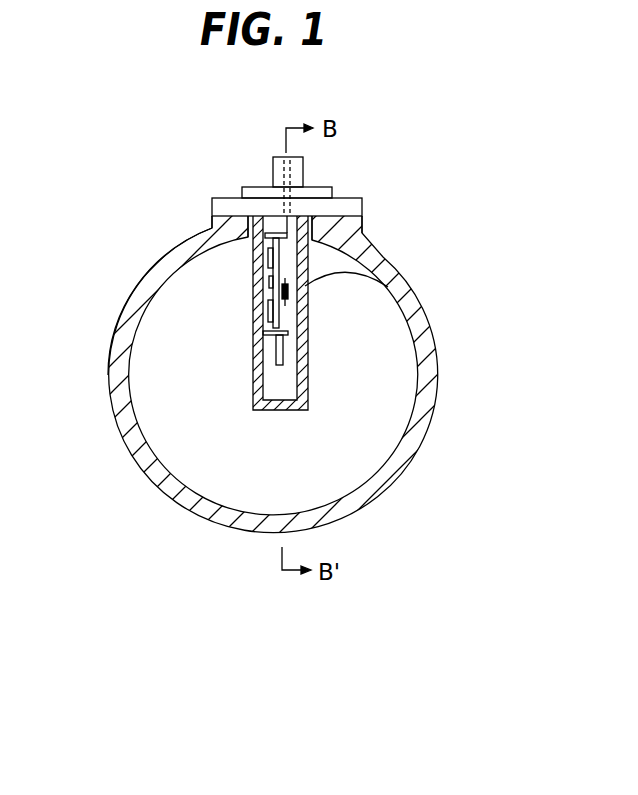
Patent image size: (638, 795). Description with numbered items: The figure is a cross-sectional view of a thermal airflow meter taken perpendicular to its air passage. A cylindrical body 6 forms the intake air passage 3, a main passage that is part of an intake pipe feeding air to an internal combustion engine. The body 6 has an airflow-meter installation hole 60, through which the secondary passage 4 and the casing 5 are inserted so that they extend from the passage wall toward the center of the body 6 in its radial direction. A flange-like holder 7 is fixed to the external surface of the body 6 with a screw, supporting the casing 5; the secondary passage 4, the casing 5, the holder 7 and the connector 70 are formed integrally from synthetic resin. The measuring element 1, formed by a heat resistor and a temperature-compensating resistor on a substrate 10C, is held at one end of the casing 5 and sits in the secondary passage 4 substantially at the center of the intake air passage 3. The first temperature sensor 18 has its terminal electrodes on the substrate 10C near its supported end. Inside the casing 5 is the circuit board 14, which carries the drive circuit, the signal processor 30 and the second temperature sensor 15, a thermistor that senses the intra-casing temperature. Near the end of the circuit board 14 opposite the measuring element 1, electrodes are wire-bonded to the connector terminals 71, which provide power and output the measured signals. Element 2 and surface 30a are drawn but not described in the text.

The measuring element 1 is at (253, 349).
The substrate (first base member) 10C is at (253, 349).
The globe 2 is at (228, 489).
The intake air passage (main passage) 3 is at (162, 490).
The secondary passage (measurement passage) 4 is at (288, 386).
The casing 5 is at (410, 283).
The cylindrical body 6 is at (112, 378).
The holder 7 is at (350, 192).
The circuit board (second base member) 14 is at (263, 306).
The second temperature sensor 15 is at (288, 296).
The first temperature sensor 18 is at (290, 352).
The signal processor 30 is at (182, 263).
The board surface 30a is at (268, 254).
The airflow-meter installation hole 60 is at (352, 234).
The connector 70 is at (277, 160).
The connector terminals 71 is at (291, 172).